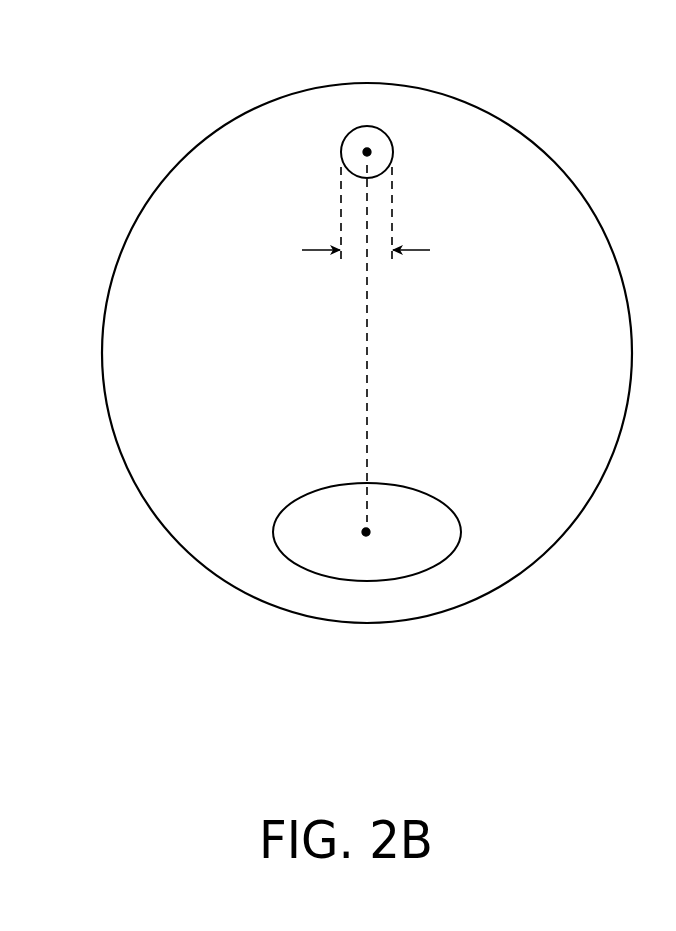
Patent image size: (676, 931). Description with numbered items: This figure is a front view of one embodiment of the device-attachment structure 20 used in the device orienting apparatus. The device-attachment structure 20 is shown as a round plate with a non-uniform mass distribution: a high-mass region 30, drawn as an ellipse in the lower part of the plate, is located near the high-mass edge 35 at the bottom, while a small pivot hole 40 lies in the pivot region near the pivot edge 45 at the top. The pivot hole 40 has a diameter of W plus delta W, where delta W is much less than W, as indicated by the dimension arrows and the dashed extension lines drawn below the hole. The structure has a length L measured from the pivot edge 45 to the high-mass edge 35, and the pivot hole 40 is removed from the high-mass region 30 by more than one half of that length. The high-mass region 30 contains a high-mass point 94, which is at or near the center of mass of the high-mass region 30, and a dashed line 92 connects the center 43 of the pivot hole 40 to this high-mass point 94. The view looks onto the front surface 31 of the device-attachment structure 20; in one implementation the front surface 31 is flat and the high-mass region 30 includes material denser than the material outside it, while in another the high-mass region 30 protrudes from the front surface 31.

The device-attachment structure 20 is at (364, 718).
The high-mass region 30 is at (340, 548).
The front surface 31 is at (613, 363).
The high-mass edge 35 is at (458, 615).
The pivot hole 40 is at (380, 133).
The center of the pivot hole 43 is at (367, 152).
The pivot edge 45 is at (415, 76).
The line 92 is at (368, 445).
The high-mass point 94 is at (384, 530).